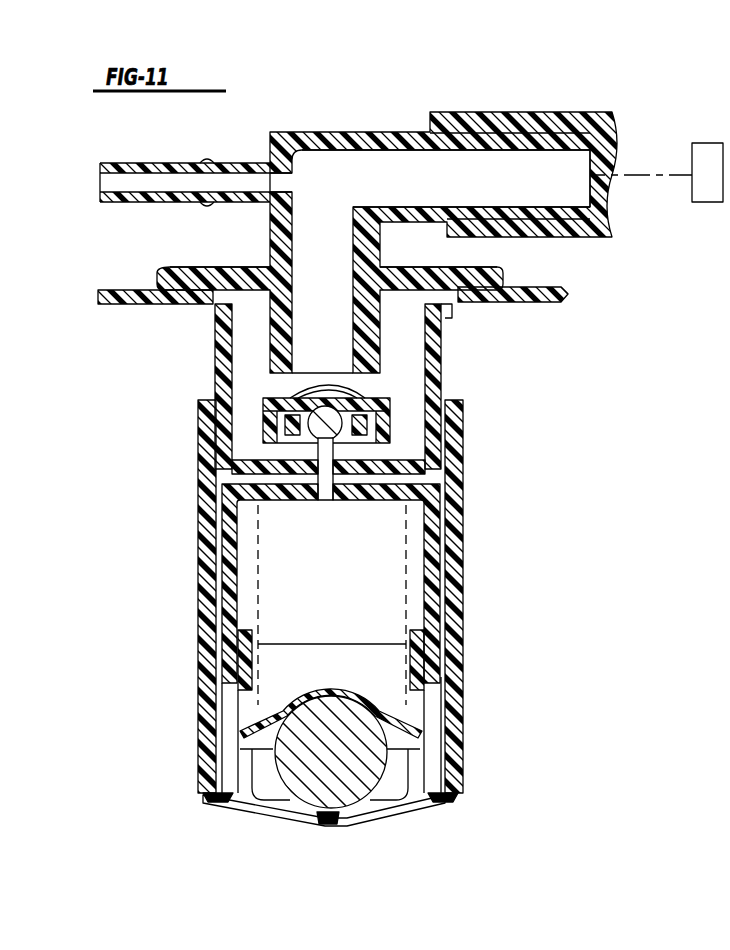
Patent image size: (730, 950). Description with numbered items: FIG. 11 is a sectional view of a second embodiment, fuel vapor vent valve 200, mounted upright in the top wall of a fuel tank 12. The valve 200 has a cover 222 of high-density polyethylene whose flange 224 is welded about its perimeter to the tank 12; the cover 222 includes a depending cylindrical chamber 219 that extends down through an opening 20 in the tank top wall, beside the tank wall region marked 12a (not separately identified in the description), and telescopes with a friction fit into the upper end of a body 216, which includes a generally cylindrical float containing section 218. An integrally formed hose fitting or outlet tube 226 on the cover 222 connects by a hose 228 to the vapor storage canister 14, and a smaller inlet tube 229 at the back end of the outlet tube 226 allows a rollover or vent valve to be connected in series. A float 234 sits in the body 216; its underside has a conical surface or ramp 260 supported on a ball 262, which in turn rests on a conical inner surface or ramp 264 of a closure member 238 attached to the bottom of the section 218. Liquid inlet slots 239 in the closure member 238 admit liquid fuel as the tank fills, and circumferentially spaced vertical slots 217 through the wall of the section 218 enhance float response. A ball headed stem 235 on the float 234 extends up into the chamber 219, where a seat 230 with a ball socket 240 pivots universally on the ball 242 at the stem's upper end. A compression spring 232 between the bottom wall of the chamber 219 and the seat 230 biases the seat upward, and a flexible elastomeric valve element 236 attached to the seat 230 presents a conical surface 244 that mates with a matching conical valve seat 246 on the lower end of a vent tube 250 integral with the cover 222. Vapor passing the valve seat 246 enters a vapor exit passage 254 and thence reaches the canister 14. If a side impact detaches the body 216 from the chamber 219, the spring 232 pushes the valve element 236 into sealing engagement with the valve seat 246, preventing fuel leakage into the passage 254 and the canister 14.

The fuel vapor vent valve 200 is at (481, 95).
The cover 222 is at (322, 124).
The outlet tube 226 is at (400, 130).
The hose 228 is at (578, 116).
The inlet tube 229 is at (140, 165).
The flange 224 is at (156, 278).
The vapor exit passage 254 is at (460, 187).
The vapor storage canister 14 is at (703, 142).
The fuel tank 12 is at (530, 286).
The tank wall aperture 12a is at (568, 300).
The opening 20 is at (447, 312).
The vent tube 250 is at (280, 340).
The chamber 219 is at (223, 370).
The conical surface 244 is at (290, 388).
The ball socket 240 is at (303, 420).
The compression spring 232 is at (218, 468).
The ball headed stem 235 is at (323, 474).
The conical valve seat 246 is at (352, 383).
The valve element 236 is at (378, 398).
The ball 242 is at (390, 412).
The seat 230 is at (400, 441).
The body 216 is at (472, 497).
The float containing section 218 is at (455, 573).
The float 234 is at (430, 607).
The ramp 260 is at (420, 732).
The vertical slots 217 is at (243, 740).
The ball 262 is at (307, 788).
The closure member 238 is at (334, 824).
The liquid inlet slots 239 is at (387, 812).
The ramp 264 is at (410, 787).